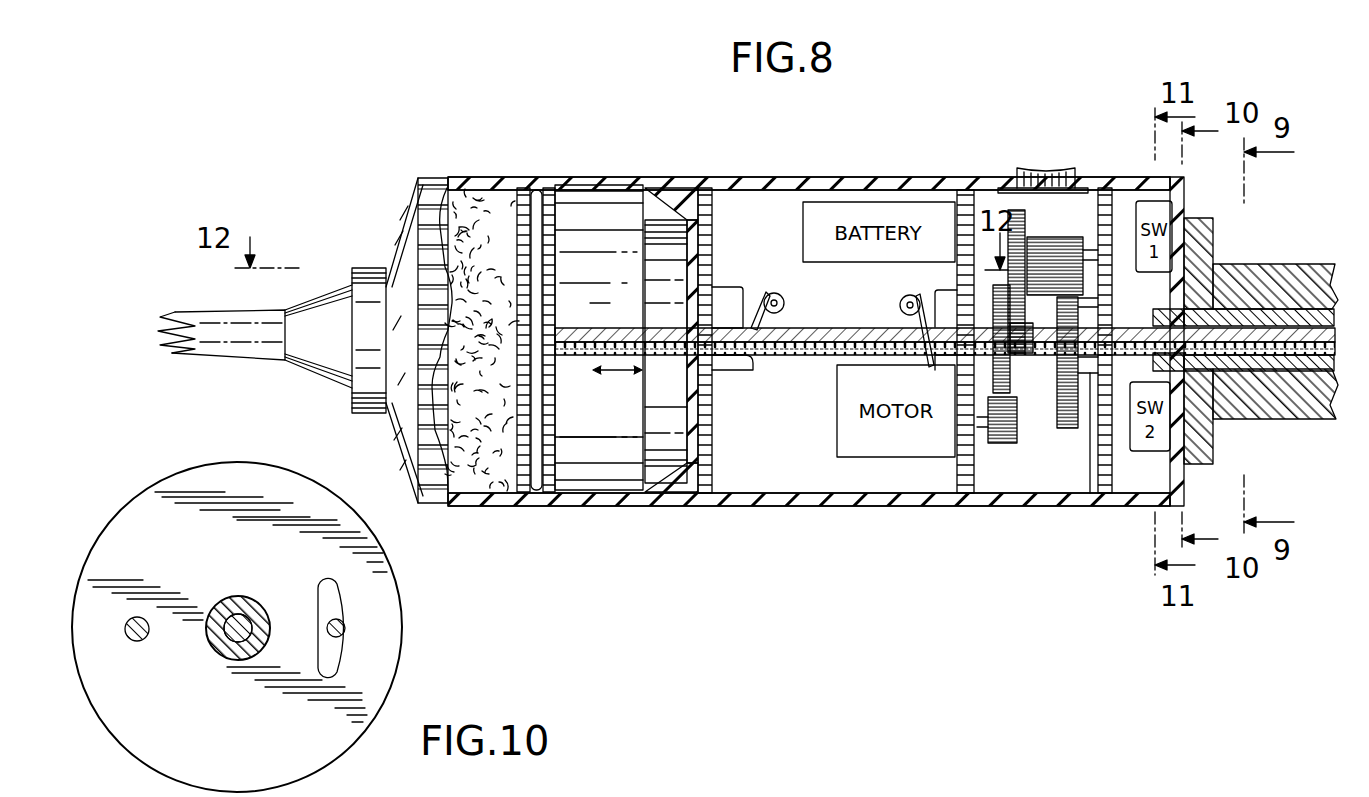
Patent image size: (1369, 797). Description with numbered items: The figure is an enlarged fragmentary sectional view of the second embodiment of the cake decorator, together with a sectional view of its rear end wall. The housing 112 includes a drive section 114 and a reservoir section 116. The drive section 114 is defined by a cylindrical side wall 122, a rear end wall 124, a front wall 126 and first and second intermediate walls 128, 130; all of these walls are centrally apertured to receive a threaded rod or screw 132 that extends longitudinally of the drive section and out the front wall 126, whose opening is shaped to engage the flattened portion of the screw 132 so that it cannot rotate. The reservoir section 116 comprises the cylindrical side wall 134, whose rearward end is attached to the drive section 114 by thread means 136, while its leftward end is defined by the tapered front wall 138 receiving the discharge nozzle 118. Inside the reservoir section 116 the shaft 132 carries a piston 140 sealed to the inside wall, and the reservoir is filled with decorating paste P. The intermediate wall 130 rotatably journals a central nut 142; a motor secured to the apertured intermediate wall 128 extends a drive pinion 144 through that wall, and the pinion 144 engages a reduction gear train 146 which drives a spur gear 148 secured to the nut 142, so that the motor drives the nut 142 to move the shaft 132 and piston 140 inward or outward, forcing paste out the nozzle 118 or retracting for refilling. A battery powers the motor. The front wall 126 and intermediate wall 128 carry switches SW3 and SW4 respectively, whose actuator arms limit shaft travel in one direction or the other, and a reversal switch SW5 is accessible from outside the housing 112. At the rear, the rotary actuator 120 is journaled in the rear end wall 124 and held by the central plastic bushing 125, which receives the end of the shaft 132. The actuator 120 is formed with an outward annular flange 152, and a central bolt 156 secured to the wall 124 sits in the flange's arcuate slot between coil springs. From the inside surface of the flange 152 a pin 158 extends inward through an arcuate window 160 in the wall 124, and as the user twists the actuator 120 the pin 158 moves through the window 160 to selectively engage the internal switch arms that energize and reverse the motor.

In FIG. 8, the housing 112 is at (756, 158).
In FIG. 8, the drive section 114 is at (850, 176).
In FIG. 8, the reservoir section 116 is at (572, 176).
In FIG. 8, the discharge nozzle 118 is at (241, 352).
In FIG. 8, the rotary actuator 120 is at (1290, 262).
In FIG. 8, the cylindrical side wall 122 is at (920, 508).
In FIG. 8, the rear end wall 124 is at (1184, 203).
In FIG. 10, the rear end wall 124 is at (290, 478).
In FIG. 8, the central plastic bushing 125 is at (1280, 370).
In FIG. 8, the front wall 126 is at (690, 247).
In FIG. 8, the first intermediate wall 128 is at (965, 178).
In FIG. 8, the second intermediate wall 130 is at (1092, 186).
In FIG. 8, the threaded rod or screw 132 is at (784, 356).
In FIG. 8, the cylindrical side wall 134 is at (608, 176).
In FIG. 8, the thread means 136 is at (665, 188).
In FIG. 8, the tapered front wall 138 is at (407, 235).
In FIG. 8, the piston 140 is at (537, 190).
In FIG. 8, the central nut 142 is at (1090, 494).
In FIG. 8, the drive pinion 144 is at (1000, 445).
In FIG. 8, the reduction gear train 146 is at (1050, 240).
In FIG. 8, the spur gear 148 is at (1062, 430).
In FIG. 8, the outward annular flange 152 is at (1219, 235).
In FIG. 10, the central bolt 156 is at (137, 642).
In FIG. 10, the pin 158 is at (345, 628).
In FIG. 10, the arcuate window 160 is at (343, 597).
In FIG. 8, the decorating paste P is at (477, 198).
In FIG. 8, the switch SW3 is at (728, 287).
In FIG. 8, the switch SW4 is at (943, 288).
In FIG. 8, the reversal switch SW5 is at (1022, 167).